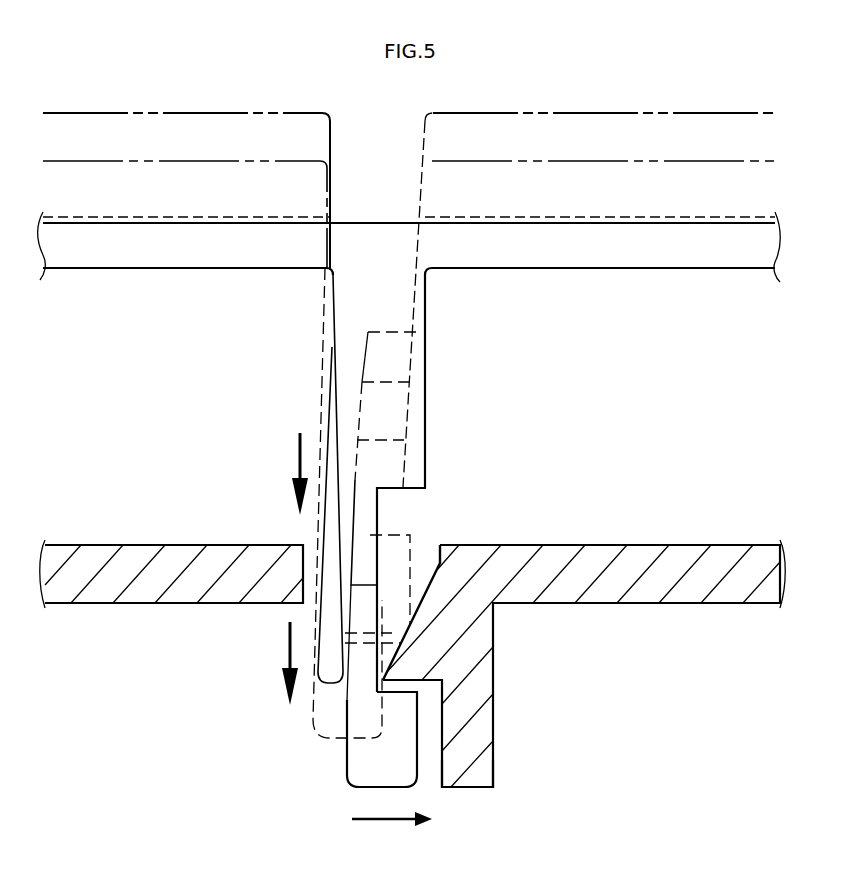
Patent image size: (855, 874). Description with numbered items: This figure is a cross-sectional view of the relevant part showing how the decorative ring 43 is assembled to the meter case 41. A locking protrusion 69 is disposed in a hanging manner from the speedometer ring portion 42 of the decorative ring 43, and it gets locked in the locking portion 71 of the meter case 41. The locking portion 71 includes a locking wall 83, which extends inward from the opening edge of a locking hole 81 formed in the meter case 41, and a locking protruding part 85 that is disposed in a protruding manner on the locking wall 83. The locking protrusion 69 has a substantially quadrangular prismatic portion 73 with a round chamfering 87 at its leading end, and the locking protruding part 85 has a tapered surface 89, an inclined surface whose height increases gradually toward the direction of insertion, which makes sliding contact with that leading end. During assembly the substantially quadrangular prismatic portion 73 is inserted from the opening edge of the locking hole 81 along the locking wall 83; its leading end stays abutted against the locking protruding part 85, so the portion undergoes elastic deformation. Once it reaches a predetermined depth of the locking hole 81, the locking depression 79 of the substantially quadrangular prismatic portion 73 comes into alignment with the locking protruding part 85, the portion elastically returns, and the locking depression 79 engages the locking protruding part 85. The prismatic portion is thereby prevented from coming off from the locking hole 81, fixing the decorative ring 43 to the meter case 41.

The meter case 41 is at (584, 655).
The speedometer ring portion 42 is at (88, 250).
The decorative ring 43 is at (617, 272).
The locking protrusion 69 is at (315, 346).
The locking portion 71 is at (424, 526).
The substantially quadrangular prismatic portion 73 is at (333, 410).
The locking depression 79 is at (382, 525).
The locking hole 81 is at (300, 566).
The locking wall 83 is at (452, 788).
The locking protruding part 85 is at (378, 668).
The round chamfering 87 is at (350, 790).
The tapered surface 89 is at (428, 556).